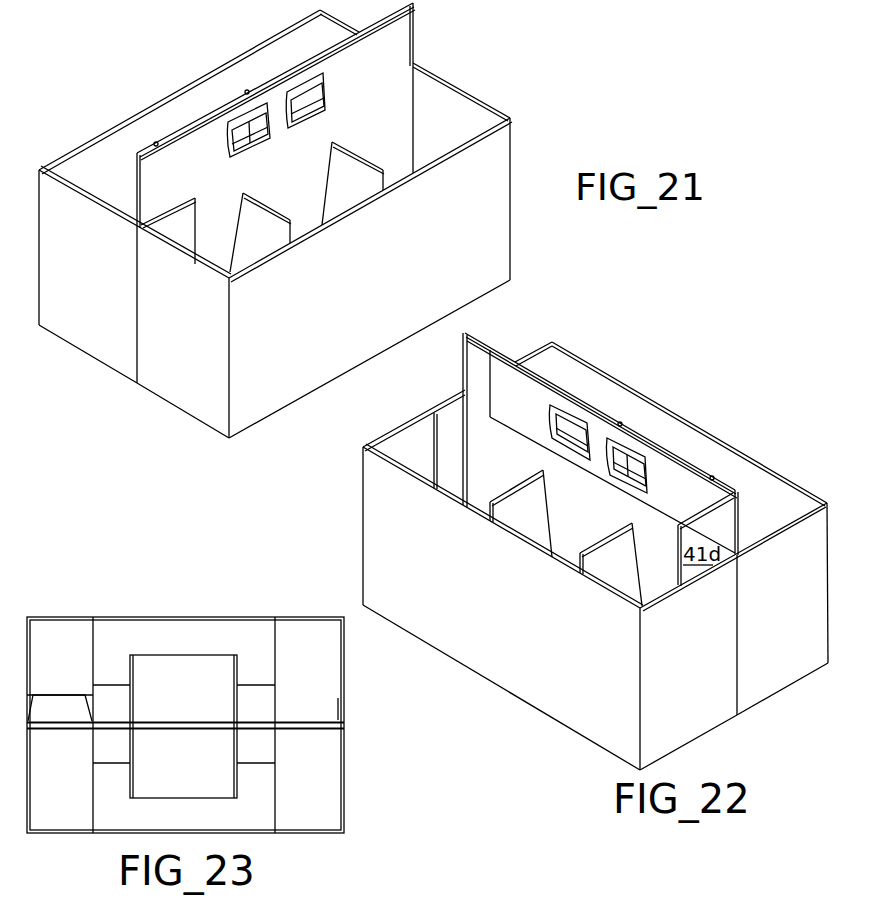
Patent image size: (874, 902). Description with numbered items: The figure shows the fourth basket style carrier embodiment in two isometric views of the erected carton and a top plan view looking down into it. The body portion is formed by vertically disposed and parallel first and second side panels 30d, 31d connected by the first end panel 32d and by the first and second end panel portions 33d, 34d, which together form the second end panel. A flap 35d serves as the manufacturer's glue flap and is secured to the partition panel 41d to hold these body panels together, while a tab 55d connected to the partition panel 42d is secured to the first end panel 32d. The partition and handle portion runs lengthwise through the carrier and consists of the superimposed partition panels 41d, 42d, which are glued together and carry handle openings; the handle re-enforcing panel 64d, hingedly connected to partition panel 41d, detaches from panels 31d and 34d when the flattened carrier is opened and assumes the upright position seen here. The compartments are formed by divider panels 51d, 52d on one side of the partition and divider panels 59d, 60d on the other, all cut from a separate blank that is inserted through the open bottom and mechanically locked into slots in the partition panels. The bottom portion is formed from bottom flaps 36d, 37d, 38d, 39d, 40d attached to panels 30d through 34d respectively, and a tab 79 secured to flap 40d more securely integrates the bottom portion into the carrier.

In FIG. 21, the first side panel 30d is at (380, 291).
In FIG. 22, the first side panel 30d is at (793, 517).
In FIG. 23, the first side panel 30d is at (325, 834).
In FIG. 21, the second side panel 31d is at (104, 178).
In FIG. 22, the second side panel 31d is at (532, 614).
In FIG. 23, the second side panel 31d is at (200, 614).
In FIG. 21, the first end panel 32d is at (471, 138).
In FIG. 22, the first end panel 32d is at (423, 460).
In FIG. 23, the first end panel 32d is at (345, 785).
In FIG. 21, the first end panel portion 33d is at (200, 331).
In FIG. 22, the first end panel portion 33d is at (806, 612).
In FIG. 23, the first end panel portion 33d is at (17, 823).
In FIG. 21, the second end panel portion 34d is at (106, 273).
In FIG. 22, the second end panel portion 34d is at (706, 673).
In FIG. 23, the second end panel portion 34d is at (17, 632).
In FIG. 21, the flap 35d is at (174, 224).
In FIG. 23, the flap 35d is at (62, 732).
In FIG. 23, the bottom flap 36d is at (197, 828).
In FIG. 23, the bottom flap 37d is at (207, 654).
In FIG. 23, the bottom flap 38d is at (329, 804).
In FIG. 23, the bottom flap 39d is at (79, 814).
In FIG. 23, the bottom flap 40d is at (79, 654).
In FIG. 21, the partition panel 41d is at (397, 85).
In FIG. 22, the partition panel 41d is at (477, 418).
In FIG. 22, the partition panel 42d is at (616, 508).
In FIG. 22, the divider panel 51d is at (625, 570).
In FIG. 22, the divider panel 52d is at (536, 519).
In FIG. 22, the tab 55d is at (447, 425).
In FIG. 23, the tab 55d is at (343, 708).
In FIG. 21, the divider panel 59d is at (369, 197).
In FIG. 21, the divider panel 60d is at (276, 254).
In FIG. 22, the handle re-enforcing panel 64d is at (698, 499).
In FIG. 23, the tab 79 is at (71, 719).